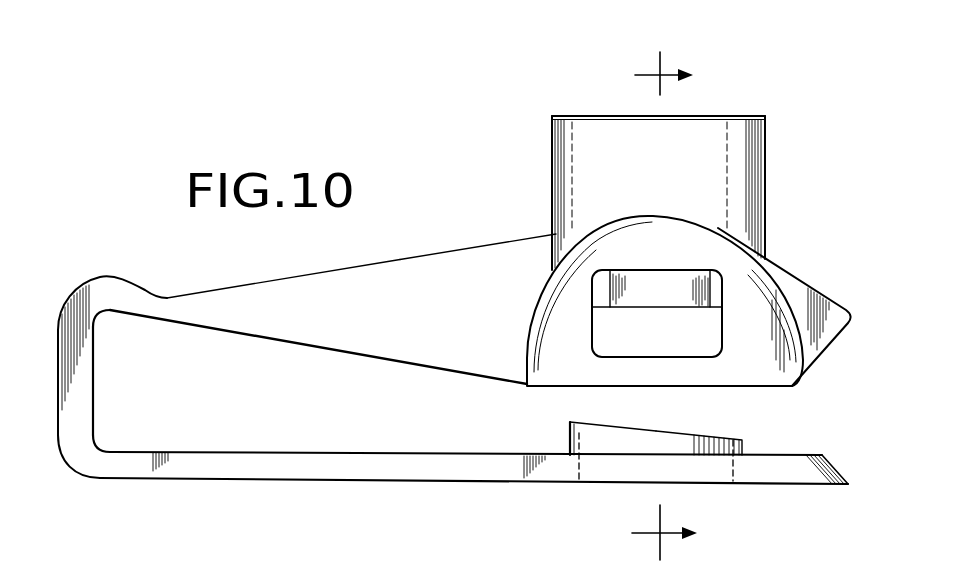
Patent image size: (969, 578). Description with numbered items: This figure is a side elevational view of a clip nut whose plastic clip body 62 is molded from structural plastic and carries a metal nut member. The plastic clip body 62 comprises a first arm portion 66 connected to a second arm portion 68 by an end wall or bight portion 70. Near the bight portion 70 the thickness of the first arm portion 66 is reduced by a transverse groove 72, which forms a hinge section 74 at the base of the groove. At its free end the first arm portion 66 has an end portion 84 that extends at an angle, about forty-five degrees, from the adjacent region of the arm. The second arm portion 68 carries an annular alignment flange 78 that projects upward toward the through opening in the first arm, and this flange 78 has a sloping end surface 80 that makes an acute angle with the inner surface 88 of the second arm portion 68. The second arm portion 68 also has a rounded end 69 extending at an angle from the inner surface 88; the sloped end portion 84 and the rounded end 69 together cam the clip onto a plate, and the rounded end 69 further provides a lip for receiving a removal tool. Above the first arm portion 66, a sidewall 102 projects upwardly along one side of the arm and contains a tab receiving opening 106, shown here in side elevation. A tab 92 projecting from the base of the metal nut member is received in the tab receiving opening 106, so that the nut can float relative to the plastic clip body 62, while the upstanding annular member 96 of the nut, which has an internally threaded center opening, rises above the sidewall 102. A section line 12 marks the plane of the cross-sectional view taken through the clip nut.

The section line 12- 12 is at (665, 304).
The plastic clip body 62 is at (212, 484).
The first arm portion 66 is at (296, 293).
The second arm portion 68 is at (318, 483).
The rounded end 69 is at (848, 488).
The bight portion 70 is at (58, 327).
The transverse groove 72 is at (167, 296).
The hinge section 74 is at (157, 308).
The annular alignment flange 78 is at (583, 433).
The sloping end surface 80 is at (692, 434).
The end portion 84 is at (833, 343).
The inner surface 88 is at (447, 449).
The tab 92 is at (670, 285).
The upstanding annular member 96 is at (584, 136).
The sidewall 102 is at (424, 271).
The tab receiving opening 106 is at (598, 326).